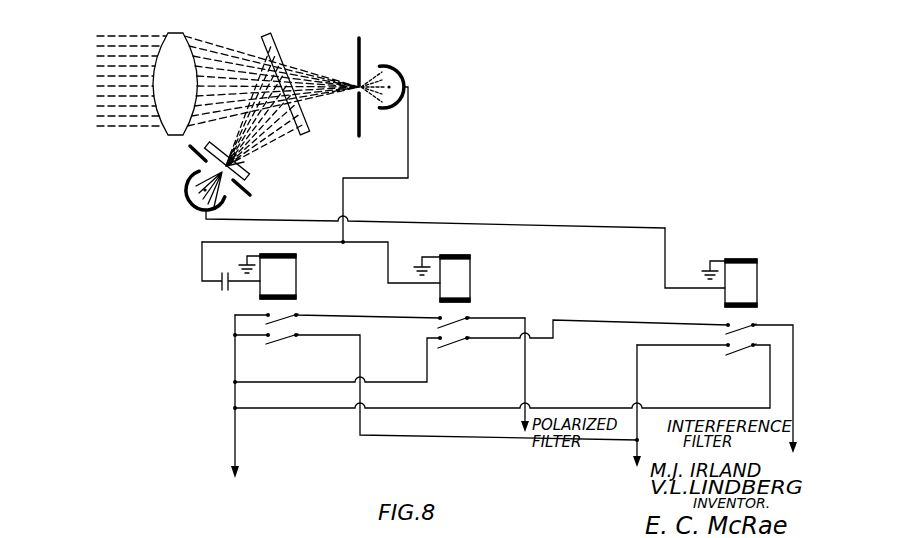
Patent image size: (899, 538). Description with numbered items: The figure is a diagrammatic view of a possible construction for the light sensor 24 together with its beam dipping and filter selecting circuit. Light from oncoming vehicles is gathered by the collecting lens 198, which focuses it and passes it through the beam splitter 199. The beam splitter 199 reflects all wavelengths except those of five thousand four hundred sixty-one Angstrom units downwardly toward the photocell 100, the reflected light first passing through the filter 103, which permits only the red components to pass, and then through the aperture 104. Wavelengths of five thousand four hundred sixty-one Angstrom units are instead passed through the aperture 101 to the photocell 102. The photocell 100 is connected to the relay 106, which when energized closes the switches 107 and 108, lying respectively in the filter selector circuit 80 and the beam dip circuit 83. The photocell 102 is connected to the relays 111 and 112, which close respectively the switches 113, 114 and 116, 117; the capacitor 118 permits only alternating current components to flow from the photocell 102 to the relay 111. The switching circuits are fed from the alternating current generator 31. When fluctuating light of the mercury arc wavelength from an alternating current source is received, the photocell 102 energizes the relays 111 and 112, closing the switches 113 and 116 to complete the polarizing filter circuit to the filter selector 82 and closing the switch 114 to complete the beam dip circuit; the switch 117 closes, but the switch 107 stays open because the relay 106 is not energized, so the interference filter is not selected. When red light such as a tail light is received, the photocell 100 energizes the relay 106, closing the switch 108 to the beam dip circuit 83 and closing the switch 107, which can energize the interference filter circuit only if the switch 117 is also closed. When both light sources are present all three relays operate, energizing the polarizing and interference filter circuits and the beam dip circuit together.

The collecting lens 198 is at (177, 36).
The beam splitter 199 is at (272, 42).
The aperture 101 is at (362, 47).
The photocell 102 is at (405, 86).
The photocell 100 is at (185, 183).
The filter 103 is at (244, 169).
The aperture 104 is at (255, 191).
The light sensor 24 is at (648, 224).
The relay 111 is at (288, 268).
The relay 112 is at (465, 270).
The relay 106 is at (753, 270).
The capacitor 118 is at (220, 286).
The switch 113 is at (300, 322).
The switch 114 is at (287, 340).
The switch 116 is at (470, 327).
The switch 117 is at (452, 346).
The switch 107 is at (755, 333).
The switch 108 is at (737, 352).
The filter selector 82 is at (522, 428).
The beam dip control 83 is at (630, 468).
The selector 80 is at (796, 447).
The alternating current generator 31 is at (238, 468).